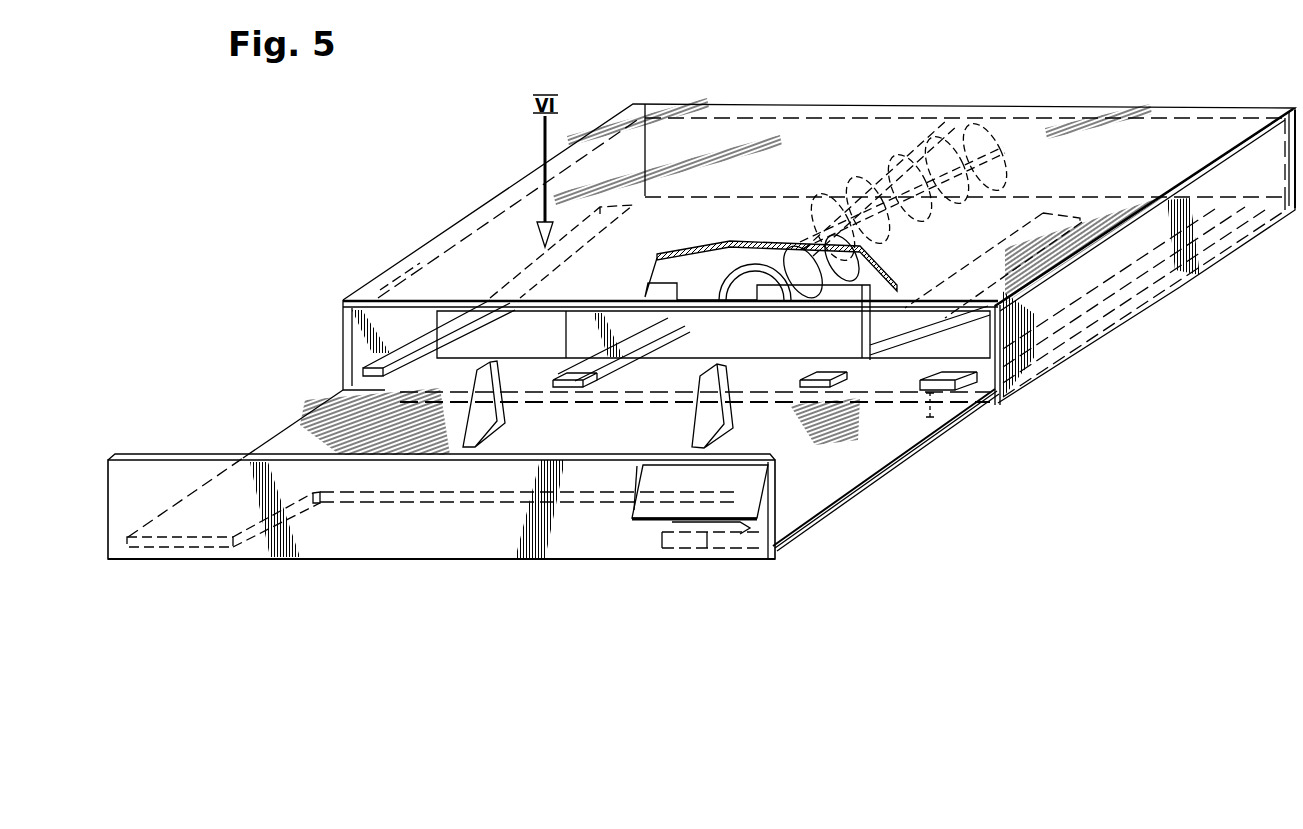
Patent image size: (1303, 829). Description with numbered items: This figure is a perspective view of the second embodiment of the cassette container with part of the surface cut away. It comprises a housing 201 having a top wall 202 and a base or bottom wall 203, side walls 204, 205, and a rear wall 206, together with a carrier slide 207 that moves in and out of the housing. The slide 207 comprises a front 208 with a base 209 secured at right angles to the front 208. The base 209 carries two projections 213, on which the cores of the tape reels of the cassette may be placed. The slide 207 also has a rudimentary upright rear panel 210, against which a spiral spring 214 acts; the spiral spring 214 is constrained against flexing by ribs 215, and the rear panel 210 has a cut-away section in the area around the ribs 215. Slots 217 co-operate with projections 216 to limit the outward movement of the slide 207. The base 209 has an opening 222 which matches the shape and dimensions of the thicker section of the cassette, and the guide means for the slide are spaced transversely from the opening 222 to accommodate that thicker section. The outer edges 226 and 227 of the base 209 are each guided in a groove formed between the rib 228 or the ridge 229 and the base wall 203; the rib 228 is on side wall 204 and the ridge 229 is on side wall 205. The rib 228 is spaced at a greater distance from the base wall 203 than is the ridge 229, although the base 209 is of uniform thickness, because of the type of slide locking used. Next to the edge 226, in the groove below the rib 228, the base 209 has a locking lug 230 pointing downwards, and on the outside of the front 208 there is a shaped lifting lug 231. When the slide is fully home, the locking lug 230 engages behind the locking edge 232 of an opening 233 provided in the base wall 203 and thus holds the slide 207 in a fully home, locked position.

The housing 201 is at (812, 104).
The top wall 202 is at (507, 240).
The base wall 203 is at (1096, 330).
The side wall 204 is at (1272, 222).
The side wall 205 is at (428, 280).
The rear wall 206 is at (703, 139).
The carrier slide 207 is at (822, 520).
The front 208 is at (470, 540).
The base 209 is at (298, 450).
The rear panel 210 is at (575, 324).
The projections 213 is at (488, 424).
The spiral spring 214 is at (700, 300).
The ribs 215 is at (768, 260).
The projections 216 is at (560, 378).
The slots 217 is at (605, 362).
The opening 222 is at (482, 498).
The outer edge 226 is at (905, 455).
The outer edge 227 is at (302, 413).
The rib 228 is at (1062, 345).
The ridge 229 is at (428, 336).
The locking lug 230 is at (732, 550).
The lifting lug 231 is at (752, 490).
The locking edge 232 is at (928, 412).
The opening 233 is at (945, 378).